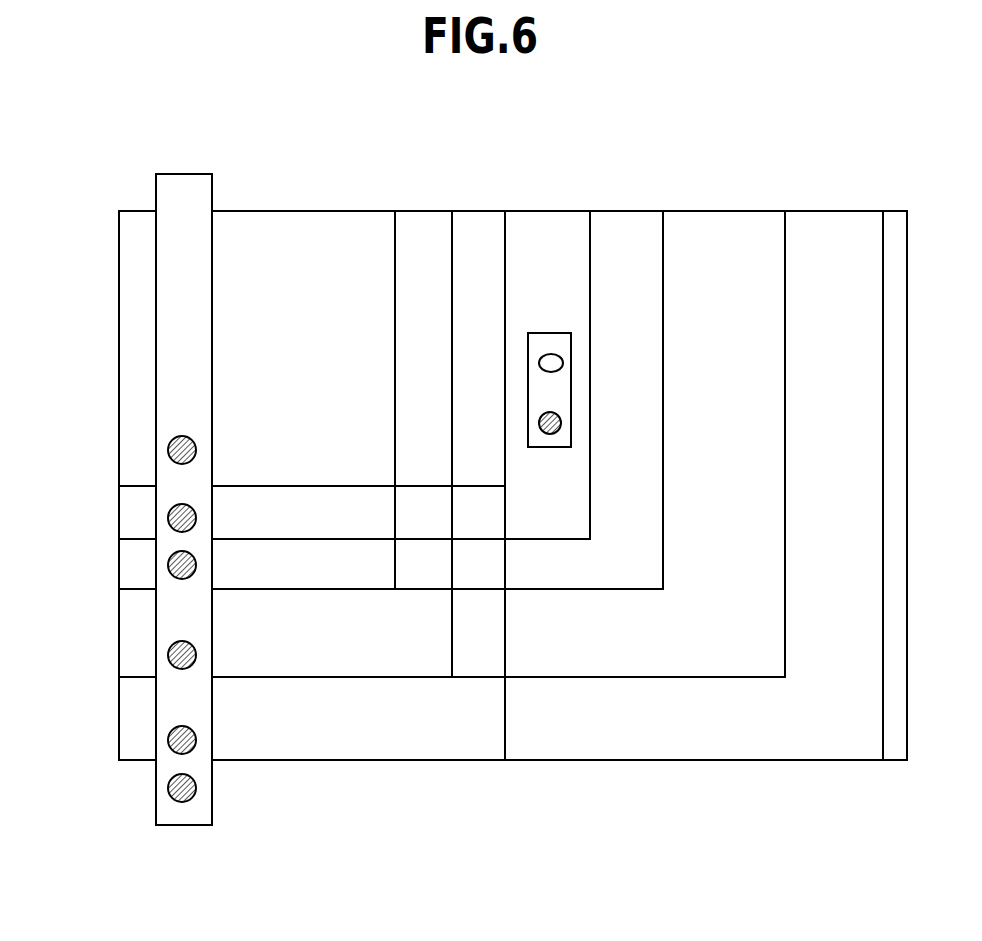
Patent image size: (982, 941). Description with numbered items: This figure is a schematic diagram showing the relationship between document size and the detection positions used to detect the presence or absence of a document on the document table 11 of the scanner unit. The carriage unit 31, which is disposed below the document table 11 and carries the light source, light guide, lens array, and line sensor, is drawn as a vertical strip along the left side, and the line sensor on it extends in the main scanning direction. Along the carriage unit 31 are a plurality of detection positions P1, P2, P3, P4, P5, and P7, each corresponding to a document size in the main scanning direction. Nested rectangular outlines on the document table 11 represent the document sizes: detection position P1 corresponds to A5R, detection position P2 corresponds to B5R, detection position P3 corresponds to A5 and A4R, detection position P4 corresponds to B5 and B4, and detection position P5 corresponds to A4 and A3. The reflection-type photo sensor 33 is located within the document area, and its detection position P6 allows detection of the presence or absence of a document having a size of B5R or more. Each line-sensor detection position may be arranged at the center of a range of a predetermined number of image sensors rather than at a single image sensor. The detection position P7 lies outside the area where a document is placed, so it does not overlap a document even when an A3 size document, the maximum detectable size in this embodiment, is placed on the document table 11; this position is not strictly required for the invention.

The document table 11 is at (837, 228).
The carriage unit 31 is at (184, 190).
The reflection-type photo sensor 33 is at (551, 357).
The detection position P1 is at (152, 447).
The detection position P2 is at (152, 516).
The detection position P3 is at (152, 563).
The detection position P4 is at (152, 651).
The detection position P5 is at (152, 734).
The detection position P6 is at (578, 414).
The detection position P7 is at (152, 786).
The A3 document size A3 is at (501, 485).
The A4 document size A4 is at (312, 485).
The A4R document size A4R is at (391, 400).
The A5 document size A5 is at (257, 400).
The A5R document size A5R is at (312, 348).
The B4 document size B4 is at (452, 444).
The B5 document size B5 is at (285, 444).
The B5R document size B5R is at (354, 375).